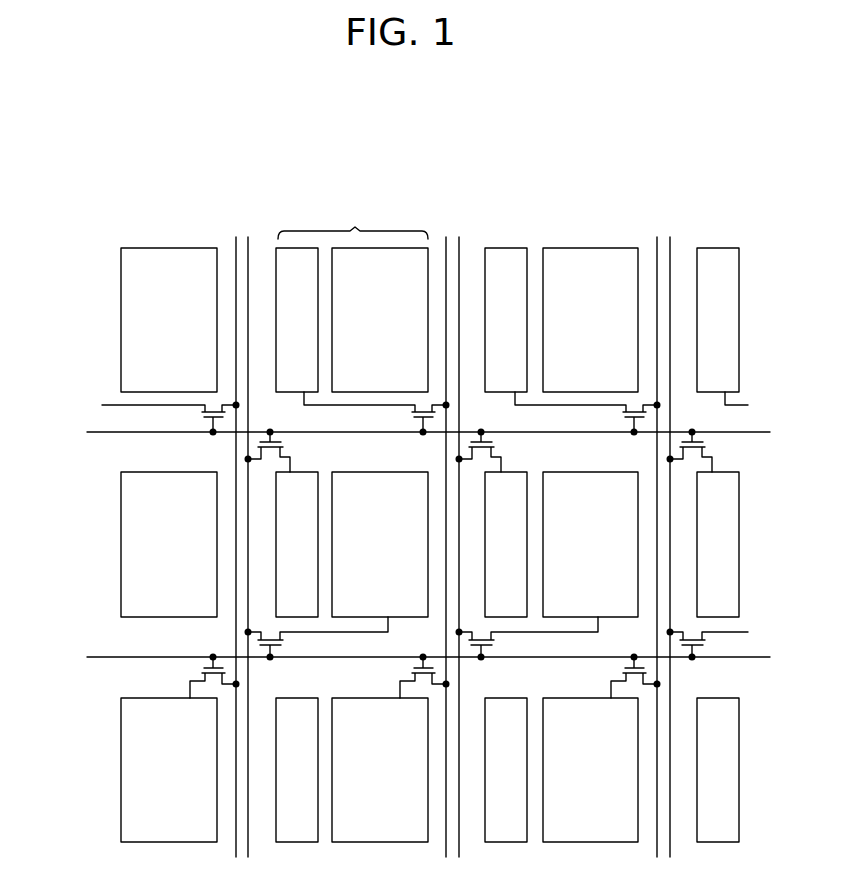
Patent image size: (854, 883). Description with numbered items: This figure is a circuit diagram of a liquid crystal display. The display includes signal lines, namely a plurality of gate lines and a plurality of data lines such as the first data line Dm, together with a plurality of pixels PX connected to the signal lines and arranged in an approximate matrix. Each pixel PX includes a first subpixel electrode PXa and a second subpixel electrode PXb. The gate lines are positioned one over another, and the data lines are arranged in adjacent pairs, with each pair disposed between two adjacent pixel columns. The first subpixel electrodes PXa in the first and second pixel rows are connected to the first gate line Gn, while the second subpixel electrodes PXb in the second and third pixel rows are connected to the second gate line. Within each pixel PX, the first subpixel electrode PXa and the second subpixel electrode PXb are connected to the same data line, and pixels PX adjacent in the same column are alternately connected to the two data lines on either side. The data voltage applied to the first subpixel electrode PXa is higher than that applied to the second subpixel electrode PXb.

The first data line Dm is at (236, 237).
The first gate line Gn is at (411, 434).
The pixel PX is at (353, 219).
The first subpixel electrode PXa is at (507, 545).
The second subpixel electrode PXb is at (379, 545).